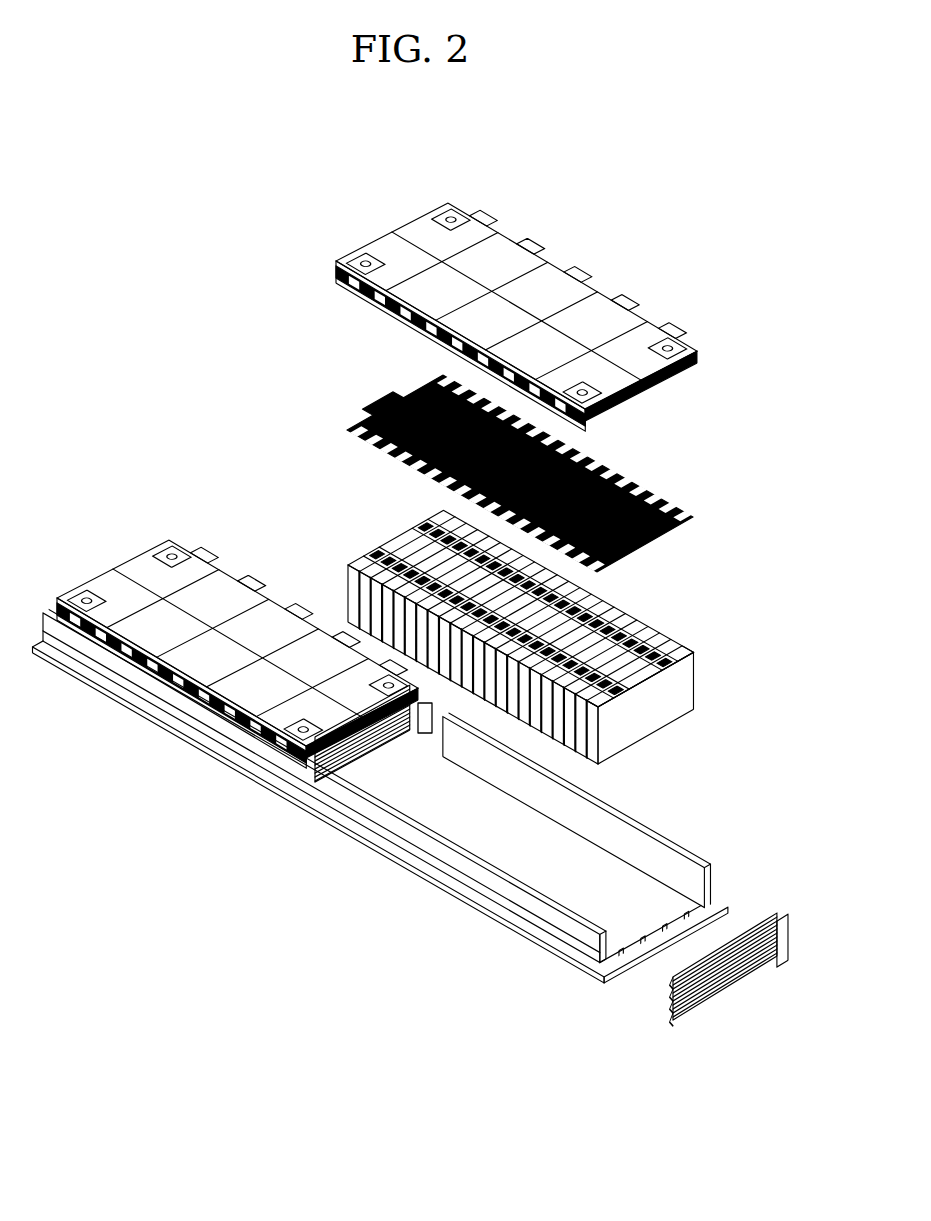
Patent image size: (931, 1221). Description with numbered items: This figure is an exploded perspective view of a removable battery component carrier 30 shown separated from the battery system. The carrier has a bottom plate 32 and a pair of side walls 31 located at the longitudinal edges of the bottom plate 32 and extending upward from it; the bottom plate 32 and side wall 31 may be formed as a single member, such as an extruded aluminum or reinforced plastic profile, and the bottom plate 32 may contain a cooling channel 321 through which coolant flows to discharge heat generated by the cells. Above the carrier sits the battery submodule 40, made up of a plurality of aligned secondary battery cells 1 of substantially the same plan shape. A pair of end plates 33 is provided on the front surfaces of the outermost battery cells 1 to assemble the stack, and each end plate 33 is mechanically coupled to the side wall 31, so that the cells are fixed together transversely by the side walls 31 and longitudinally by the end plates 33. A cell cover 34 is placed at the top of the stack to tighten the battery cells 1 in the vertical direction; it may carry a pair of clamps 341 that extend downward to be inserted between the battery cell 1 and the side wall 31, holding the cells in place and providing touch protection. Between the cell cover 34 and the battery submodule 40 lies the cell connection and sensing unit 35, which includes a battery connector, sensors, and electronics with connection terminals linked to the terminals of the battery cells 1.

The battery cell 1 is at (672, 630).
The removable battery component carrier 30 is at (123, 560).
The side wall 31 is at (467, 885).
The bottom plate 32 is at (604, 892).
The cooling channel 321 is at (633, 983).
The end plate 33 is at (728, 993).
The cell cover 34 is at (395, 225).
The clamp 341 is at (602, 424).
The cell connection and sensing unit 35 is at (370, 395).
The battery submodule 40 is at (703, 680).